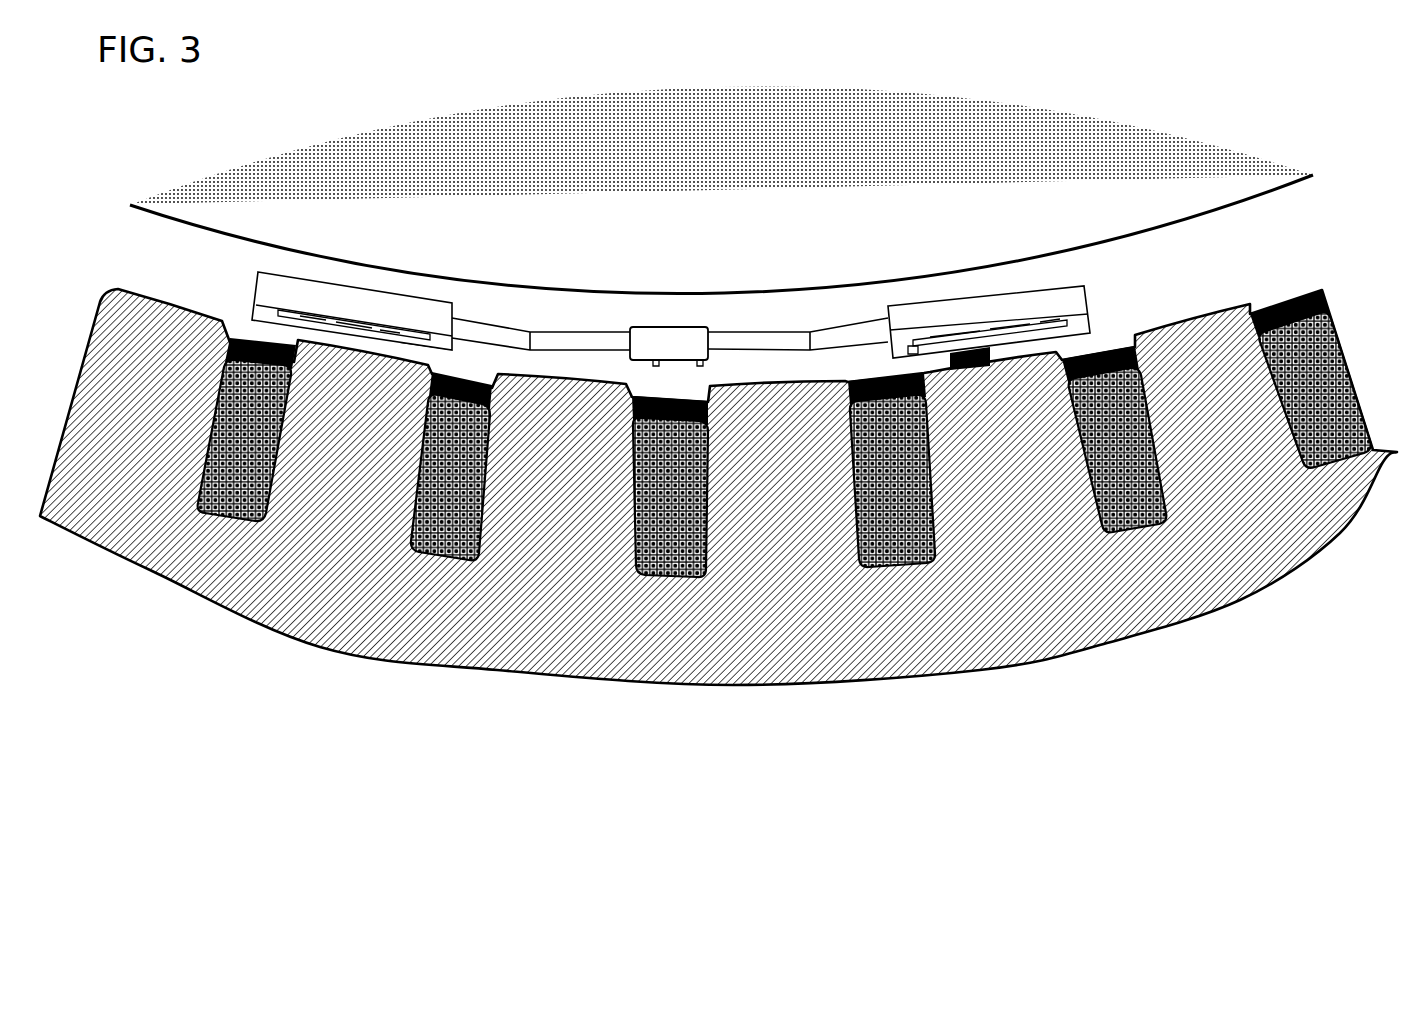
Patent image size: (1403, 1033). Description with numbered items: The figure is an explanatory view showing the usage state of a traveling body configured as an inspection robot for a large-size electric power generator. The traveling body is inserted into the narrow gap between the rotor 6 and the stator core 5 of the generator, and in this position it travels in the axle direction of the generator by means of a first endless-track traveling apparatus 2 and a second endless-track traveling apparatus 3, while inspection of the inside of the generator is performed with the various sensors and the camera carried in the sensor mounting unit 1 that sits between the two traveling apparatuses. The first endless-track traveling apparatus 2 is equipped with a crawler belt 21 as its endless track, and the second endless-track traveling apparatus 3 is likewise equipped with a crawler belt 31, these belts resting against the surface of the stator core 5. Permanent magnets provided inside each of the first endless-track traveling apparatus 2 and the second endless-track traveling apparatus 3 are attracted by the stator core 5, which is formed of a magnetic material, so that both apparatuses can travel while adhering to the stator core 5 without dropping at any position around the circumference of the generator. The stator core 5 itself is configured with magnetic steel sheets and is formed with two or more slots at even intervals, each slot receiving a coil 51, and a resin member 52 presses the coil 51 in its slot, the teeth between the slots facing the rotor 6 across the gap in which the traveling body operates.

The sensor mounting unit 1 is at (672, 345).
The first endless-track traveling apparatus 2 is at (347, 307).
The second endless-track traveling apparatus 3 is at (1012, 318).
The stator core 5 is at (540, 616).
The rotor 6 is at (480, 228).
The crawler belt 21 is at (365, 345).
The crawler belt 31 is at (963, 360).
The coil 51 is at (690, 550).
The resin member 52 is at (622, 408).